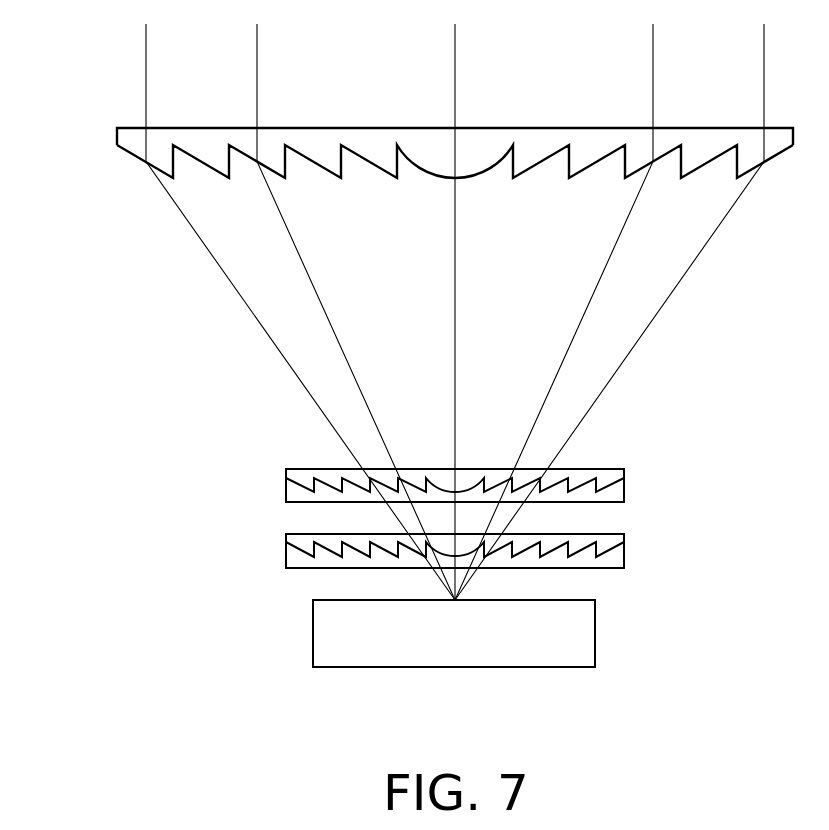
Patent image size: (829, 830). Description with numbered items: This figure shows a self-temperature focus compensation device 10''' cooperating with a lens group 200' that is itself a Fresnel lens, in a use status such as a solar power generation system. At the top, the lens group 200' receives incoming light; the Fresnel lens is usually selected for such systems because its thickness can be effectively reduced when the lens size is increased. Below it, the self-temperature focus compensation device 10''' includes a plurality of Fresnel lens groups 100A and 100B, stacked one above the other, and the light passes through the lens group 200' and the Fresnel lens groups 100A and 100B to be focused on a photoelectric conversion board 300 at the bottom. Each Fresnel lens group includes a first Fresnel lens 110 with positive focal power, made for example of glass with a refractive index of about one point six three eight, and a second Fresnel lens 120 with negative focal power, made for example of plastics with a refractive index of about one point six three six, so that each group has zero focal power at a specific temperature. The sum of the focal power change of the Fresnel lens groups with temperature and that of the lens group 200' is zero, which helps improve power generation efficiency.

The lens group 200' is at (410, 153).
The self-temperature focus compensation device 10''' is at (482, 470).
The Fresnel lens group 100A is at (456, 477).
The Fresnel lens group 100B is at (638, 534).
The first Fresnel lens 110 is at (286, 471).
The second Fresnel lens 120 is at (286, 484).
The photoelectric conversion board 300 is at (313, 645).